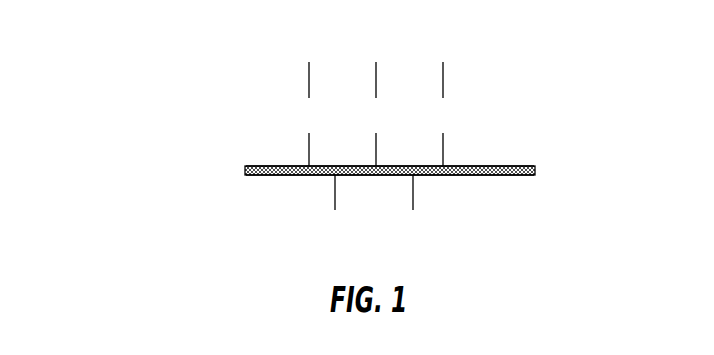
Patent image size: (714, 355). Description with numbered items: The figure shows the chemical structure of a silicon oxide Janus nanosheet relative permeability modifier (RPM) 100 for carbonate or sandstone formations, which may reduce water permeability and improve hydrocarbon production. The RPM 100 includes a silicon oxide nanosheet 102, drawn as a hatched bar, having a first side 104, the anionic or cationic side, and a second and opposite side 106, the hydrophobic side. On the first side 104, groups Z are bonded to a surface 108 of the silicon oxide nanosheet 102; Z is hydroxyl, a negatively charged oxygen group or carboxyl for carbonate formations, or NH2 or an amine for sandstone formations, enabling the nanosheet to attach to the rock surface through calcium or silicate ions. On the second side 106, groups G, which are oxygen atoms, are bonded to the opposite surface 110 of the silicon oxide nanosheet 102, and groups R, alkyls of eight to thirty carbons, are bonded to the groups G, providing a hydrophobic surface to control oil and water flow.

The silicon oxide Janus nanosheet relative permeability modifier (RPM) 100 is at (136, 59).
The silicon oxide nanosheet 102 is at (523, 166).
The first side 104 is at (462, 198).
The second side 106 is at (480, 41).
The surface 108 is at (254, 176).
The opposite surface 110 is at (254, 165).